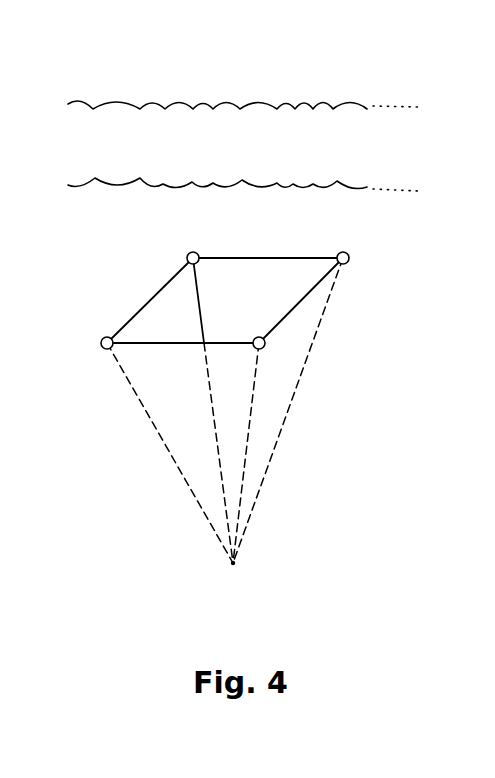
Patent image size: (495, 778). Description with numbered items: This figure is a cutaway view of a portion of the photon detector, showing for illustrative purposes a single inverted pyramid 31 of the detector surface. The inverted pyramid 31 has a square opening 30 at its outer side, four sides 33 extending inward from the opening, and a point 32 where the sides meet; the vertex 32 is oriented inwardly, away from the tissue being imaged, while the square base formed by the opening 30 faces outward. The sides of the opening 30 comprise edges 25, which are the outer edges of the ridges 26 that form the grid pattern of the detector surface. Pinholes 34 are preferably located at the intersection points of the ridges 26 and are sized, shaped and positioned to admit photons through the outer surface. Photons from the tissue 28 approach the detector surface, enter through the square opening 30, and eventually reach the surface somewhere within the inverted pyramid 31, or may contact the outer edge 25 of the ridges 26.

The outer edge 25 is at (320, 282).
The ridges 26 is at (153, 343).
The tissue 28 is at (259, 103).
The square opening 30 is at (242, 283).
The inverted pyramid 31 is at (323, 385).
The vertex 32 is at (236, 566).
The sides 33 is at (187, 336).
The pinholes 34 is at (189, 252).